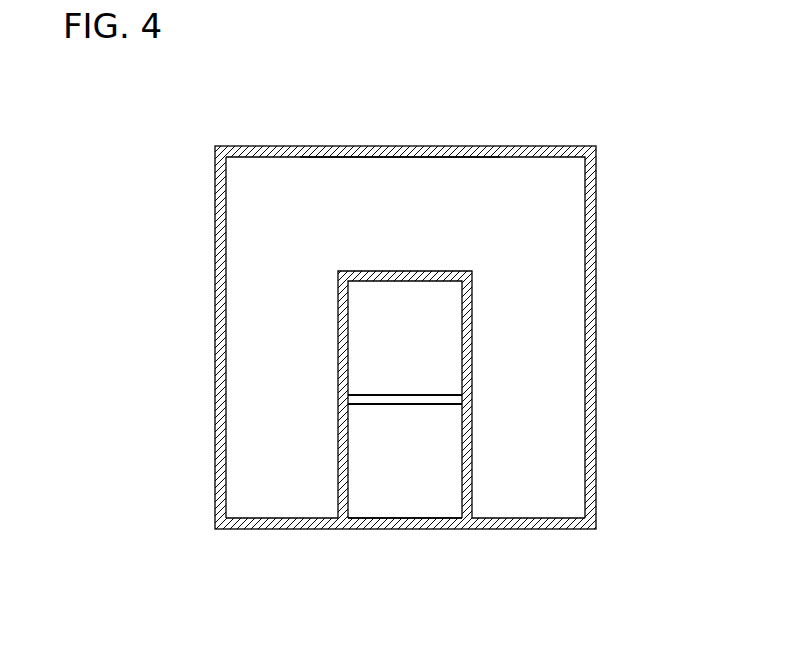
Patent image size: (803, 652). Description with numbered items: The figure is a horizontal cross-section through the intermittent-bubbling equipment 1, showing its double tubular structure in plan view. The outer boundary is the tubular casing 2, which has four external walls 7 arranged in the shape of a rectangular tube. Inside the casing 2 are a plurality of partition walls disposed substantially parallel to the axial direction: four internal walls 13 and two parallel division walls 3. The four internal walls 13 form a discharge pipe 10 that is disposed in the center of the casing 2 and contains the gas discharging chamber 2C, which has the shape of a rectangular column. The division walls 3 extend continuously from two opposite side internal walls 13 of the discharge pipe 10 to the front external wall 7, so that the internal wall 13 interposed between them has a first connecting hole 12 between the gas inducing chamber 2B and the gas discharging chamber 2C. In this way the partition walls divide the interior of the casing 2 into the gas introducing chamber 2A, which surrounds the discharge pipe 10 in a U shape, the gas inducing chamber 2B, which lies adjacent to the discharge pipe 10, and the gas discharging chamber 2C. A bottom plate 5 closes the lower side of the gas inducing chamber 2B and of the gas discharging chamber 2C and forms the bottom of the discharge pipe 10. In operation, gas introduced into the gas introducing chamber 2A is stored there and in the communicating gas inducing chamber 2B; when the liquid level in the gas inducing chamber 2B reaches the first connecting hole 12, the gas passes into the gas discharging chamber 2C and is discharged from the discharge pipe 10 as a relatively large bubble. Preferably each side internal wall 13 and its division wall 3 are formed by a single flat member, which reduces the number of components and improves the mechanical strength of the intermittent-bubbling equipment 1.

The intermittent-bubbling equipment 1 is at (401, 300).
The casing 2 is at (401, 300).
The gas introducing chamber 2A is at (437, 158).
The gas inducing chamber 2B is at (445, 512).
The gas discharging chamber 2C is at (372, 302).
The division wall 3 is at (337, 470).
The bottom plate 5 is at (378, 512).
The external wall 7 is at (495, 150).
The discharge pipe 10 is at (401, 300).
The first connecting hole 12 is at (390, 400).
The internal wall 13 is at (390, 270).